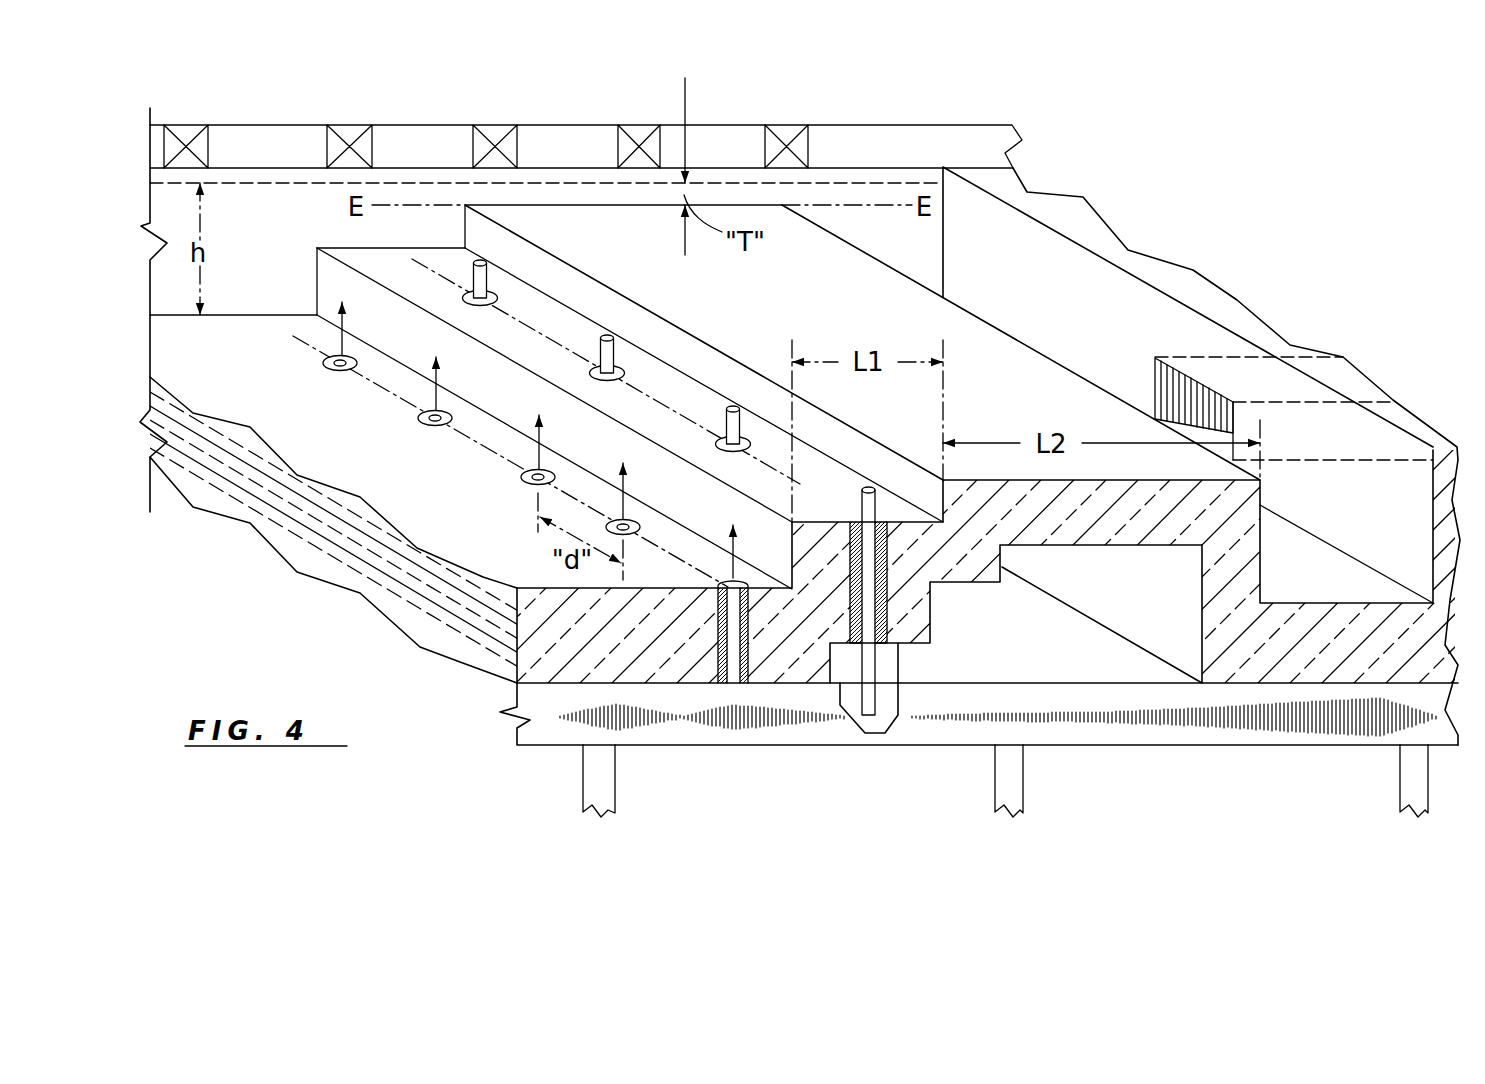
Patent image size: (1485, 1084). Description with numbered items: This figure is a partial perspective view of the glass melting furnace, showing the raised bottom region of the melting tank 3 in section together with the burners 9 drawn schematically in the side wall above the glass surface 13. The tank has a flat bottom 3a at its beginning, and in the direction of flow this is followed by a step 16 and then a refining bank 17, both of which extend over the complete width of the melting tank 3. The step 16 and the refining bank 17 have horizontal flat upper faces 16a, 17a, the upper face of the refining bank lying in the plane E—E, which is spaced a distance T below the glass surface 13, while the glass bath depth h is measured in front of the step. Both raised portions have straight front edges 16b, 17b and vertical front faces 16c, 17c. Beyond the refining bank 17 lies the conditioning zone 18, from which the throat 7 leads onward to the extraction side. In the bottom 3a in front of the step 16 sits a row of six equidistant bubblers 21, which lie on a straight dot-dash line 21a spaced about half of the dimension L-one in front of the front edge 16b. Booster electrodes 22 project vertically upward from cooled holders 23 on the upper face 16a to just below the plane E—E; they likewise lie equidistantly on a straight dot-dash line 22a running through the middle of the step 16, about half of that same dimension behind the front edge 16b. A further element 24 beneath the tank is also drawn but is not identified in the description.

The melting tank 3 is at (432, 618).
The flat bottom 3a is at (242, 402).
The throat 7 is at (1189, 370).
The burners 9 is at (640, 133).
The glass surface 13 is at (890, 181).
The step 16 is at (653, 382).
The upper face of the step 16a is at (362, 262).
The front edge of the step 16b is at (534, 382).
The front face of the step 16c is at (335, 290).
The refining bank 17 is at (1040, 408).
The upper face of the refining bank 17a is at (983, 348).
The front edge of the refining bank 17b is at (704, 335).
The front face of the refining bank 17c is at (482, 237).
The conditioning zone 18 is at (1322, 524).
The bubblers 21 is at (340, 368).
The straight line of the bubblers 21a is at (467, 443).
The booster electrodes 22 is at (517, 303).
The straight line of the booster electrodes 22a is at (826, 490).
The cooled holder 23 is at (900, 613).
The floor slab 24 is at (727, 707).